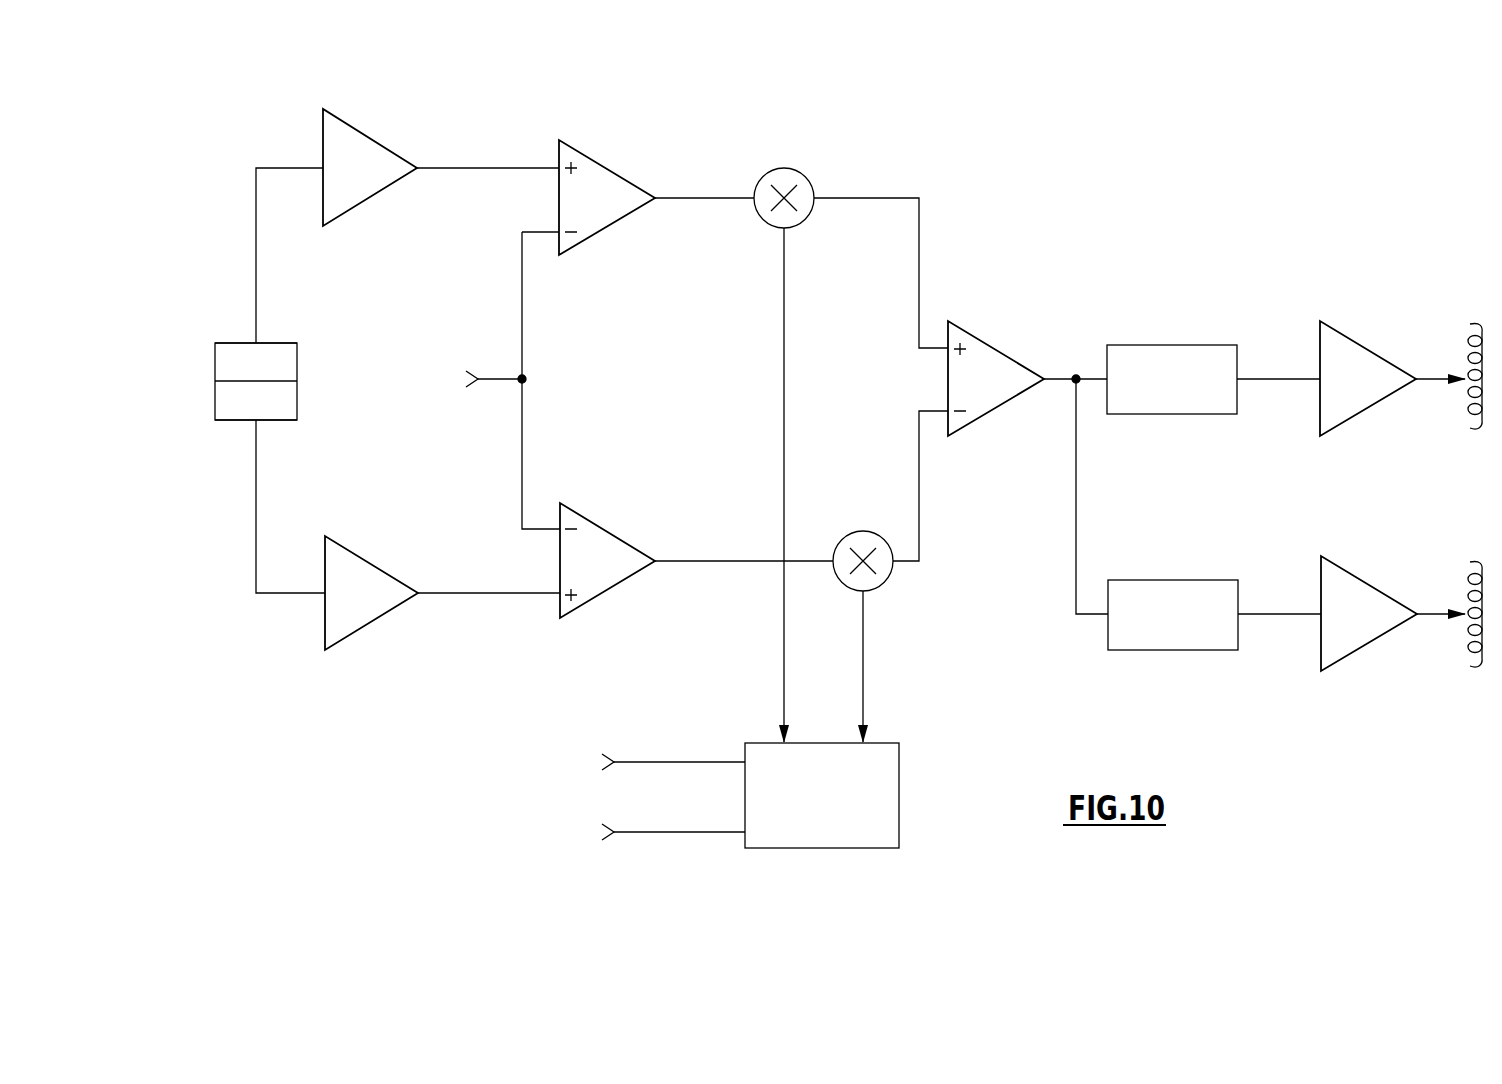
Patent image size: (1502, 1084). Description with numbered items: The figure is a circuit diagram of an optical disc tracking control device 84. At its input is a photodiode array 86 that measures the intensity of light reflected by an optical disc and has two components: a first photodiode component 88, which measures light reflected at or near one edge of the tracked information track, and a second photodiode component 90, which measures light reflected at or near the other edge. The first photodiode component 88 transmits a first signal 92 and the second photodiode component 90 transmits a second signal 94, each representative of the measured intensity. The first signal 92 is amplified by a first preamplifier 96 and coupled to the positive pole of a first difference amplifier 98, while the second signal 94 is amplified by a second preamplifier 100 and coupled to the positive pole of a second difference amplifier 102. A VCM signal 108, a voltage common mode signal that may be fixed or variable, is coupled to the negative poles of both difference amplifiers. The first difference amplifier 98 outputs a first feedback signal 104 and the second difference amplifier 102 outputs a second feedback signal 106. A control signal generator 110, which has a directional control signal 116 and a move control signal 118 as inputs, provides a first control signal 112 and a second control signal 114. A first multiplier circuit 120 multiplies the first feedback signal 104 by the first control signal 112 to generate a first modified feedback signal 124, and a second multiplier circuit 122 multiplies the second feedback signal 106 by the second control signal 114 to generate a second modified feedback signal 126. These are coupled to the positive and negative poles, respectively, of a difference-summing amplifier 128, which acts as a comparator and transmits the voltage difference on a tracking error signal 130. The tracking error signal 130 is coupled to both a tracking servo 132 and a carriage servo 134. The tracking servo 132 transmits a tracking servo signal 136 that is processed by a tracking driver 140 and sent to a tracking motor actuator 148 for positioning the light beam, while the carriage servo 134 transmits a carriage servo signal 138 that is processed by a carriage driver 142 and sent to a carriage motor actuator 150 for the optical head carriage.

The optical disc tracking control device 84 is at (828, 128).
The photodiode array 86 is at (215, 381).
The first photodiode component 88 is at (240, 343).
The second photodiode component 90 is at (240, 420).
The first signal 92 is at (289, 168).
The second signal 94 is at (292, 593).
The first preamplifier 96 is at (362, 131).
The first difference amplifier 98 is at (598, 161).
The second preamplifier 100 is at (370, 626).
The second difference amplifier 102 is at (606, 596).
The first feedback signal 104 is at (663, 197).
The second feedback signal 106 is at (690, 563).
The VCM signal 108 is at (500, 378).
The control signal generator 110 is at (900, 801).
The first control signal 112 is at (784, 696).
The second control signal 114 is at (864, 688).
The directional control signal 116 is at (640, 762).
The move control signal 118 is at (640, 832).
The first multiplier circuit 120 is at (804, 176).
The second multiplier circuit 122 is at (870, 531).
The first modified feedback signal 124 is at (893, 197).
The second modified feedback signal 126 is at (910, 565).
The difference-summing amplifier 128 is at (972, 333).
The tracking error signal 130 is at (1077, 484).
The tracking servo 132 is at (1162, 345).
The carriage servo 134 is at (1162, 580).
The tracking servo signal 136 is at (1245, 378).
The carriage servo signal 138 is at (1247, 612).
The tracking driver 140 is at (1370, 352).
The carriage driver 142 is at (1372, 587).
The tracking motor actuator 148 is at (1484, 326).
The carriage motor actuator 150 is at (1484, 564).